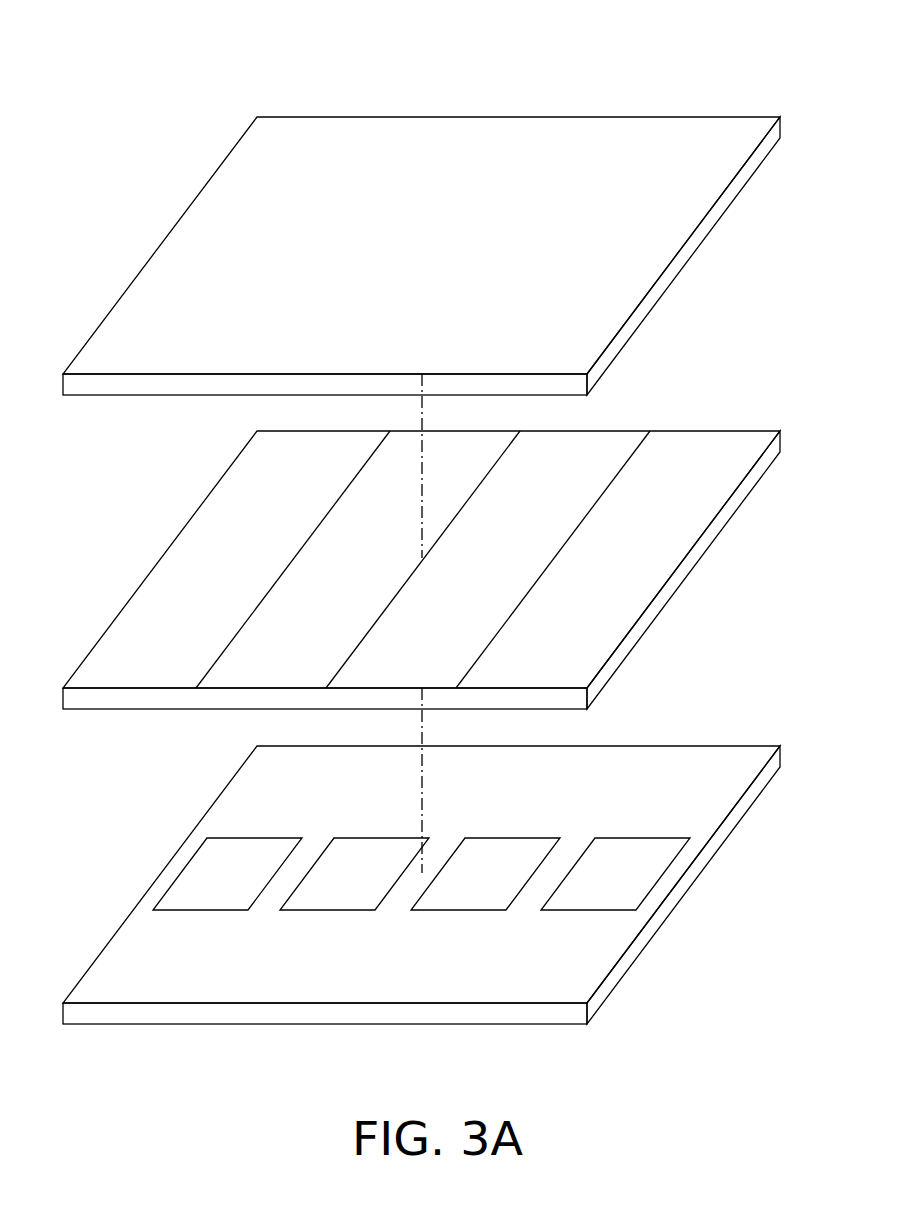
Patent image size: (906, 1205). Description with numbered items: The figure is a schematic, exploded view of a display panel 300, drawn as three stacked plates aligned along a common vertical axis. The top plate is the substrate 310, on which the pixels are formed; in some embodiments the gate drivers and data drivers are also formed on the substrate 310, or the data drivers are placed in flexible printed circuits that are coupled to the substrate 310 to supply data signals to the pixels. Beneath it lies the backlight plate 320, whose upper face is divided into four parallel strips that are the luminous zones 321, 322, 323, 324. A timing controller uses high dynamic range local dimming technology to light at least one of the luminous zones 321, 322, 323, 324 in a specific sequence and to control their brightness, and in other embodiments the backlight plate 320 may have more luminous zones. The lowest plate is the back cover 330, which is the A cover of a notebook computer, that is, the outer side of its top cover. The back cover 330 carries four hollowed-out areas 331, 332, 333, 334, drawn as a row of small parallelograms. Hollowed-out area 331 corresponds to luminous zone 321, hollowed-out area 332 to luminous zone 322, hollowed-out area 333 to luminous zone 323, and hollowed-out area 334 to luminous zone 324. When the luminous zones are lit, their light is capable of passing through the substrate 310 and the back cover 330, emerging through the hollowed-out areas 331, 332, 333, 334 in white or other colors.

The display panel 300 is at (88, 45).
The substrate 310 is at (688, 248).
The backlight plate 320 is at (422, 570).
The luminous zone 321 is at (252, 576).
The luminous zone 322 is at (382, 576).
The luminous zone 323 is at (512, 576).
The luminous zone 324 is at (644, 576).
The back cover 330 is at (422, 885).
The hollowed-out area 331 is at (248, 890).
The hollowed-out area 332 is at (377, 890).
The hollowed-out area 333 is at (508, 890).
The hollowed-out area 334 is at (638, 890).